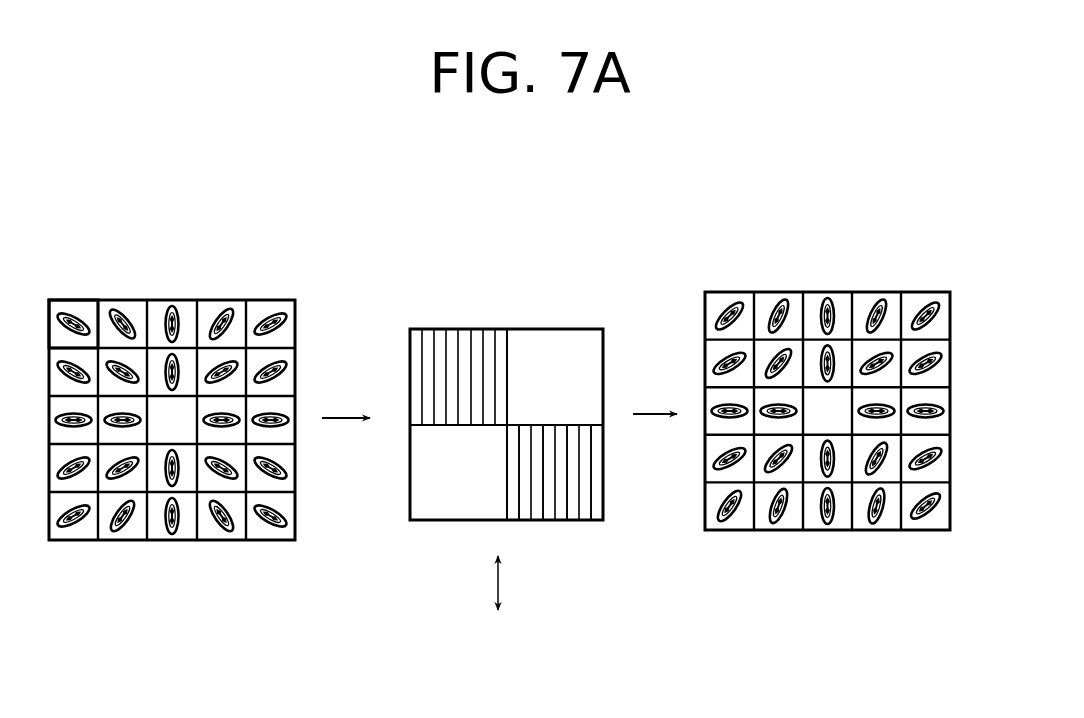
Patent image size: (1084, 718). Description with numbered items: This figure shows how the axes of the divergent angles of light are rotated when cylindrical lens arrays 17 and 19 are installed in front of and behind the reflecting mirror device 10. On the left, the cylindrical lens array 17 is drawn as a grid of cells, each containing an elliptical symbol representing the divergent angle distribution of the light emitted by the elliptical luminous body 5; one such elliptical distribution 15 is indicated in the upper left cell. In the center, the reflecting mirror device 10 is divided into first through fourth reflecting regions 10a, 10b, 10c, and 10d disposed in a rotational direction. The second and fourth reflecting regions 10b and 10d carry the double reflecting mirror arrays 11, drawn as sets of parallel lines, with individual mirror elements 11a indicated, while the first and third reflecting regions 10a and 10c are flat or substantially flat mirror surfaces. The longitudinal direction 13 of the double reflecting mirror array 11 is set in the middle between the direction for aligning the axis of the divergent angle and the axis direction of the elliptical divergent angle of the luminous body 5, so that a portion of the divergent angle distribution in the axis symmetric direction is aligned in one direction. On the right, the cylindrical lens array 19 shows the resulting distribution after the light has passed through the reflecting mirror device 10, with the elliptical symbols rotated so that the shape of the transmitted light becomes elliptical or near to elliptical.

The elliptical luminous body 5 is at (90, 287).
The liquid crystal molecule 15 is at (78, 322).
The cylindrical lens array 17 is at (172, 433).
The reflecting mirror device 10 is at (516, 424).
The first reflecting region 10a is at (565, 356).
The second reflecting region 10b is at (411, 356).
The third reflecting region 10c is at (445, 500).
The fourth reflecting region 10d is at (604, 499).
The double reflecting mirror array 11 is at (517, 521).
The ridges 11a is at (562, 521).
The longitudinal direction 13 is at (497, 584).
The cylindrical lens array 19 is at (827, 531).